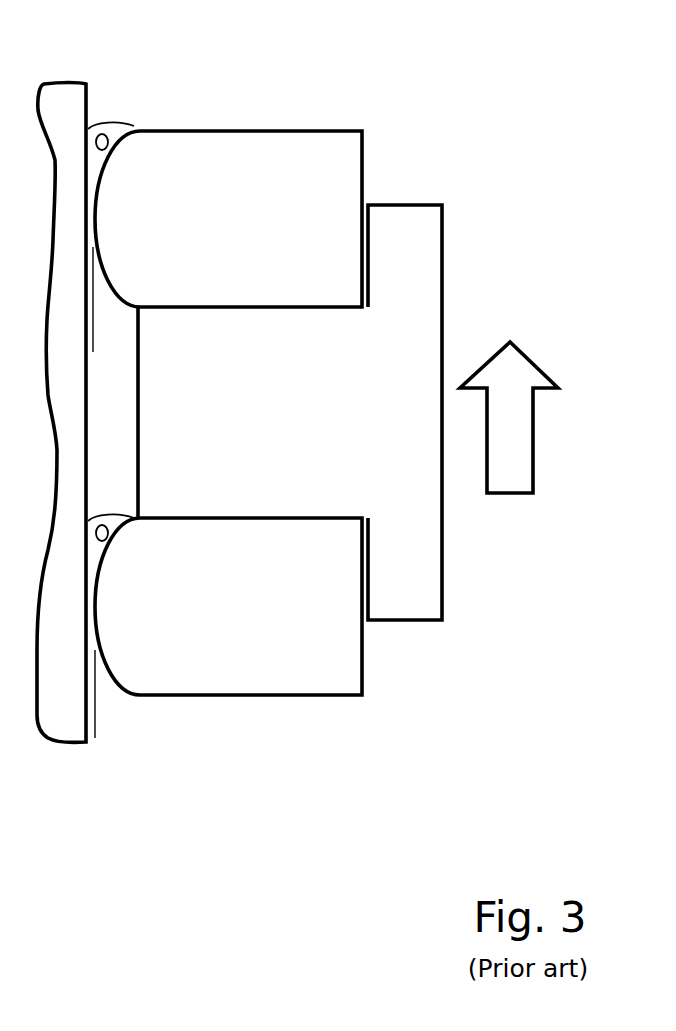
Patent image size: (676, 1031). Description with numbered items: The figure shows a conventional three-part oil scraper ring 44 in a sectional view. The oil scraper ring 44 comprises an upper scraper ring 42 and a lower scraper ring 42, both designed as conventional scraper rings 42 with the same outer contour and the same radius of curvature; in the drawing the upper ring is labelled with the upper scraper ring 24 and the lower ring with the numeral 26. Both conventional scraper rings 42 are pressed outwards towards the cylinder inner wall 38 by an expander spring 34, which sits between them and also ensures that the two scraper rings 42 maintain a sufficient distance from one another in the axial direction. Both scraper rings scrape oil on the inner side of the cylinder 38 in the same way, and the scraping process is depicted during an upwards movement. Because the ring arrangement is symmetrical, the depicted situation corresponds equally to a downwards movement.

The three-part oil scraper ring 44 is at (392, 116).
The cylinder inner wall 38 is at (61, 413).
The expander spring 34 is at (290, 412).
The conventional scraper ring 42 is at (225, 430).
The upper scraper ring 24 is at (225, 237).
The second magnet 26 is at (225, 626).